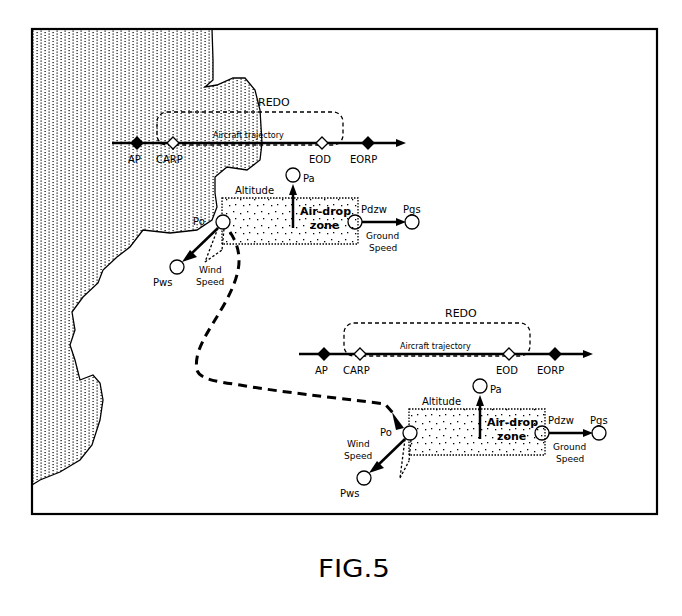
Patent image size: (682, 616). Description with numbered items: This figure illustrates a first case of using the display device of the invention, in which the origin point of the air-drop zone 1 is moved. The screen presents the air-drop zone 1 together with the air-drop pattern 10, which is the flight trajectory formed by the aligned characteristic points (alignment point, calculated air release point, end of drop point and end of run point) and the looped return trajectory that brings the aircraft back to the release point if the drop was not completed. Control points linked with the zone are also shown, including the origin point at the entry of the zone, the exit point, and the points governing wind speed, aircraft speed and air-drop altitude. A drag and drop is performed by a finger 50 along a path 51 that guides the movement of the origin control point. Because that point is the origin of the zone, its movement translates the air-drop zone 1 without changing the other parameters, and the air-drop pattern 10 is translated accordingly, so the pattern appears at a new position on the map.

The air-drop pattern 10 is at (347, 114).
The air-drop zone 1 is at (302, 248).
The finger 50 is at (196, 241).
The path 51 is at (233, 392).